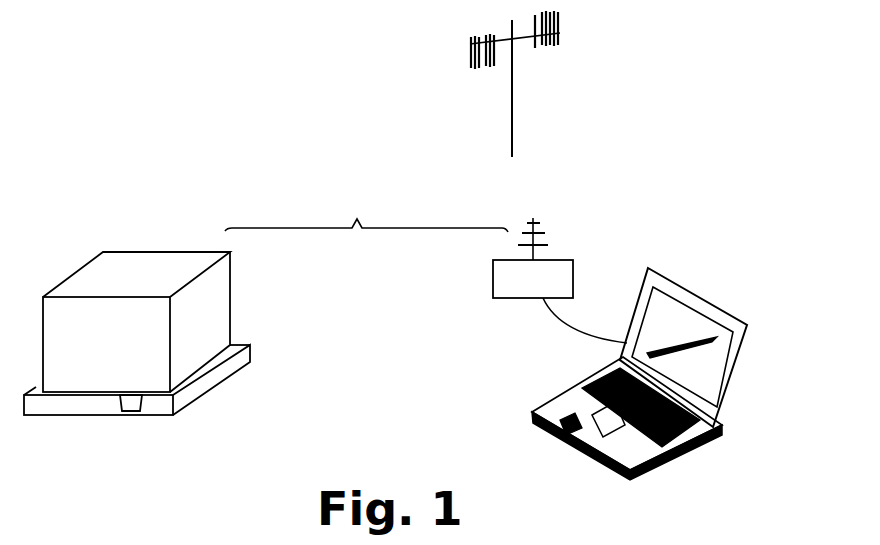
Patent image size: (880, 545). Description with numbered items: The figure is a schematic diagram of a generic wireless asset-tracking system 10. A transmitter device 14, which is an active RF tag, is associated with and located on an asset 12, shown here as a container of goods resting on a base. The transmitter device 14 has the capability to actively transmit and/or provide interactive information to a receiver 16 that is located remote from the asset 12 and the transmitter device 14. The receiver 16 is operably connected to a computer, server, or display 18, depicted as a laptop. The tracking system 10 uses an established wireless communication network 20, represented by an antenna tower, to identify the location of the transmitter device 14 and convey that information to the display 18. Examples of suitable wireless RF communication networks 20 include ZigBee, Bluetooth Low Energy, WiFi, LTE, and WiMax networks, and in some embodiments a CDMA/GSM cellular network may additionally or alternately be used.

The tracking system 10 is at (323, 198).
The asset 12 is at (138, 276).
The transmitter device 14 is at (136, 412).
The receiver 16 is at (559, 264).
The display 18 is at (713, 303).
The wireless communication network 20 is at (547, 53).